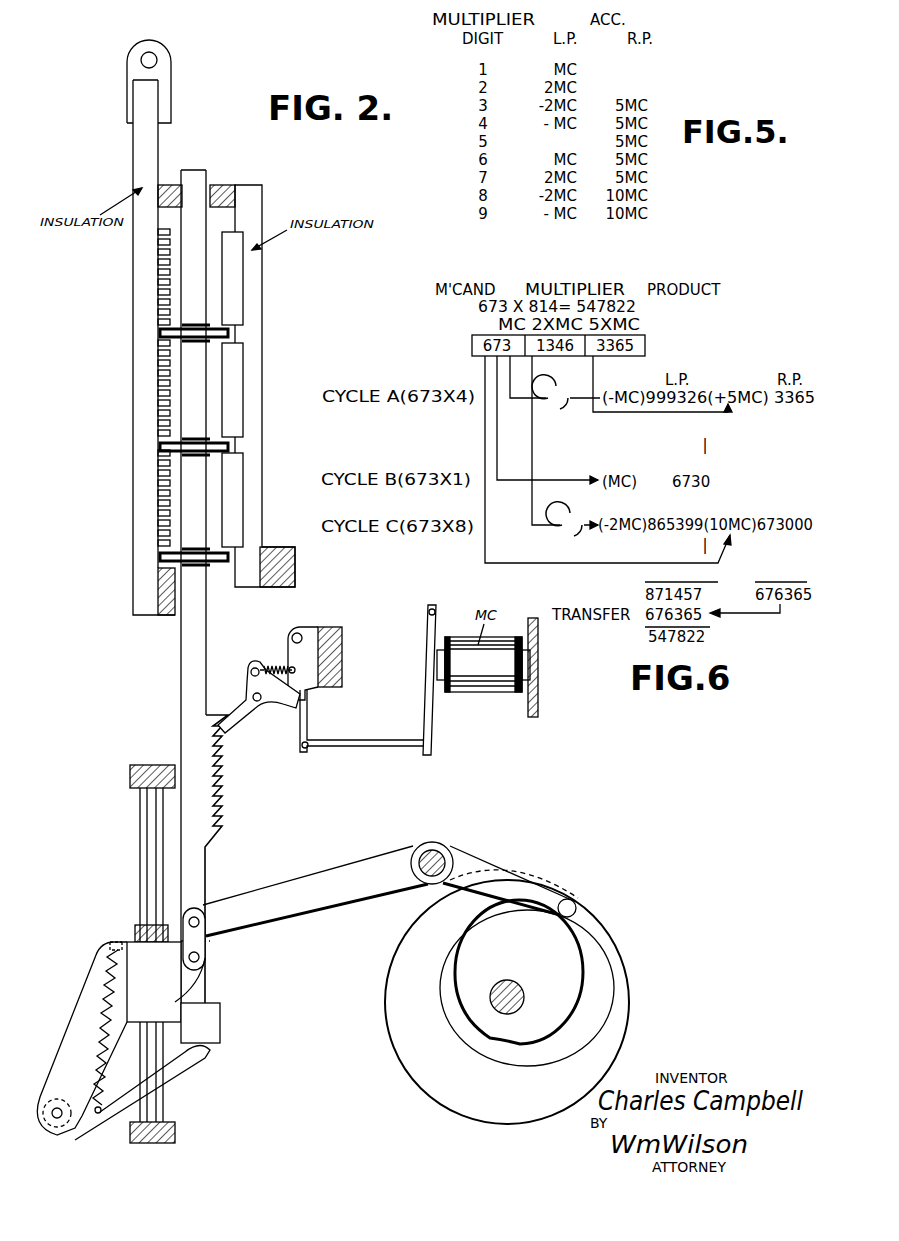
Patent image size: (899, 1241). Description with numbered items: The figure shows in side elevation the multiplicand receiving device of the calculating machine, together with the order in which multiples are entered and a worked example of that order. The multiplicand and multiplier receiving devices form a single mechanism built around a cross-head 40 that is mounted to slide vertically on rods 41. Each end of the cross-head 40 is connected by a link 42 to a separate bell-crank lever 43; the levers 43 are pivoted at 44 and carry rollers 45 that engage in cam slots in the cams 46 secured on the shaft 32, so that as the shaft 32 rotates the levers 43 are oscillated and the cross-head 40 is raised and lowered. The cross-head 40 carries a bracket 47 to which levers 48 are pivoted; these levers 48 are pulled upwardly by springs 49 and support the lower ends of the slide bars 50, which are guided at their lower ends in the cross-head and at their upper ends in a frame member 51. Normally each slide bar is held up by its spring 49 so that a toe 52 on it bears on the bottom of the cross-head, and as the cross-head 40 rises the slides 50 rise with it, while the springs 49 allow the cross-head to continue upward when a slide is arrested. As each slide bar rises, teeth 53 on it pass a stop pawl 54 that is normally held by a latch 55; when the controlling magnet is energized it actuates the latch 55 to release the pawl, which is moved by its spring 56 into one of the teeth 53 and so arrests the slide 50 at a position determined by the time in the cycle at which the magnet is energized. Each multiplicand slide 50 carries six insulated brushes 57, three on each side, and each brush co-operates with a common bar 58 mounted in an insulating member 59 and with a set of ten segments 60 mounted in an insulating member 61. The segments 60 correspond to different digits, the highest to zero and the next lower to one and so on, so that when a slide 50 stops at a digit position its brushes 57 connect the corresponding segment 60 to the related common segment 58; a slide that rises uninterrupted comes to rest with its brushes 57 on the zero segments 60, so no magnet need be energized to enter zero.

The shaft 32 is at (515, 992).
The cross-head 40 is at (135, 957).
The rods 41 is at (150, 848).
The link 42 is at (200, 942).
The bell-crank lever 43 is at (315, 891).
The pivot 44 is at (441, 856).
The roller 45 is at (568, 906).
The cam 46 is at (620, 970).
The bracket 47 is at (82, 1013).
The lever 48 is at (115, 1118).
The spring 49 is at (99, 1074).
The slide bar 50 is at (181, 666).
The frame member 51 is at (214, 190).
The toe 52 is at (212, 1031).
The teeth 53 is at (222, 798).
The stop pawl 54 is at (238, 712).
The latch 55 is at (307, 719).
The spring 56 is at (274, 666).
The brushes 57 is at (160, 333).
The common bar 58 is at (237, 466).
The insulating member 59 is at (252, 286).
The segments 60 is at (158, 282).
The insulating member 61 is at (132, 160).